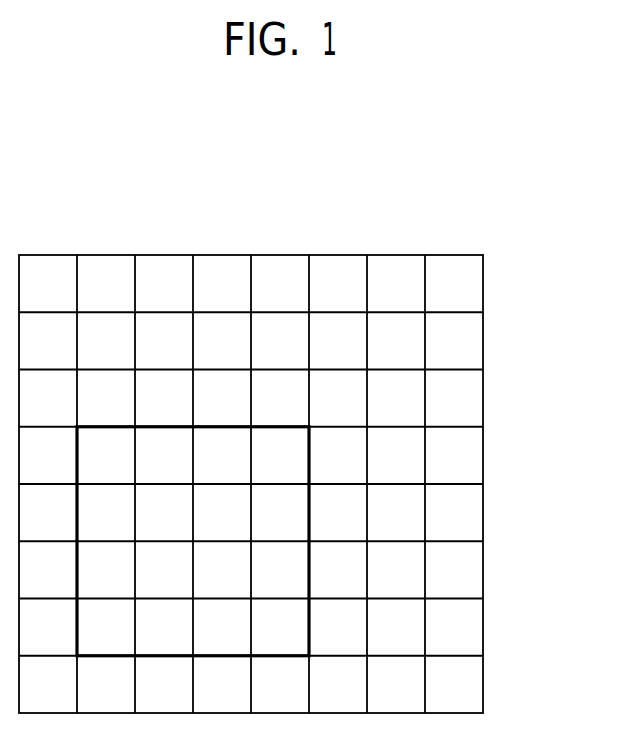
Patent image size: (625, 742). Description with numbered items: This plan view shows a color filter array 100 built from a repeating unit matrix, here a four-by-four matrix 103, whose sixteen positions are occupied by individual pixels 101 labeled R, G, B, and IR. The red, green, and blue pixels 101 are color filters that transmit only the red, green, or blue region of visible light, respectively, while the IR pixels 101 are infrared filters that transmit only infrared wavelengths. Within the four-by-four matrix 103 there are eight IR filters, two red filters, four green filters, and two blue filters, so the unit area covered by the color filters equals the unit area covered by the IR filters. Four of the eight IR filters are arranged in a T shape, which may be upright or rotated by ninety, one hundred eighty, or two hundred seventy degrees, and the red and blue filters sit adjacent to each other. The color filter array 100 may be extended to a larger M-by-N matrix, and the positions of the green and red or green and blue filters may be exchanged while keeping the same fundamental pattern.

The color filter array 100 is at (262, 432).
The pixels (R, G, B, IR) 101 is at (250, 485).
The 4*4 matrix 103 is at (310, 498).